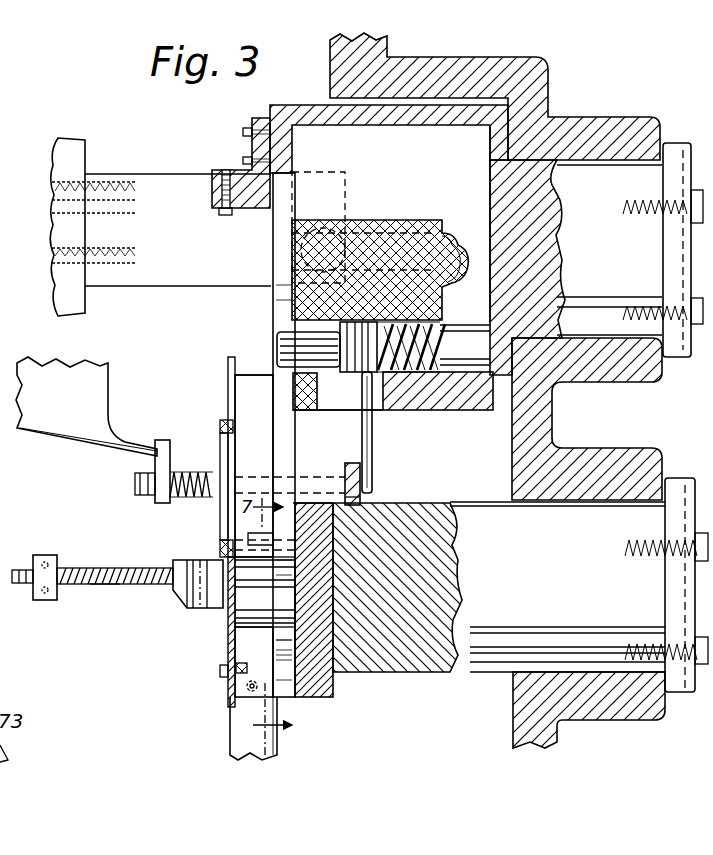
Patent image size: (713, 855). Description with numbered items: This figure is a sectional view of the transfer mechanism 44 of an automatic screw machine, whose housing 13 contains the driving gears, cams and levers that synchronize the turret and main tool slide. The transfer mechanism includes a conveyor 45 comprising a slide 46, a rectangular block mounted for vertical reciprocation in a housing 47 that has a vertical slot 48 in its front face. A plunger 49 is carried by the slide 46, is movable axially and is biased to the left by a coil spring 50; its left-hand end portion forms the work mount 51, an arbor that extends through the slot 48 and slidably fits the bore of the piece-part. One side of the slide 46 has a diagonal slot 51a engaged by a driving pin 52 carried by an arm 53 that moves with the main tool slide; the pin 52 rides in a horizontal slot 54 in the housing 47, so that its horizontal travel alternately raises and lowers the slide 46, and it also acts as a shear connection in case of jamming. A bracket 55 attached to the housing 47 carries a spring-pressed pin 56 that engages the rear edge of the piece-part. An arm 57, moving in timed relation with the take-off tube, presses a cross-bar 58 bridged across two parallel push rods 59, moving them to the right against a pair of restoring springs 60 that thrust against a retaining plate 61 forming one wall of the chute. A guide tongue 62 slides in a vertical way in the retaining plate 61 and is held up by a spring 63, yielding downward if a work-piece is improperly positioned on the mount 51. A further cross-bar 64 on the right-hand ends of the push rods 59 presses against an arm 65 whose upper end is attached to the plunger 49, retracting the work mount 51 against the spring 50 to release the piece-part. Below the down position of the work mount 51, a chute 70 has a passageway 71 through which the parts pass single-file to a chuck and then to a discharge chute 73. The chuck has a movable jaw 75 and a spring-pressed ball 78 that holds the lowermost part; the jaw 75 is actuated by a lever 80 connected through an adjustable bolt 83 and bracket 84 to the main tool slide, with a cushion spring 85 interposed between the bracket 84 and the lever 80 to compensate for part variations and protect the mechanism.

The housing 13 is at (579, 117).
The transfer mechanism 44 is at (228, 385).
The conveyor 45 is at (430, 430).
The slide 46 is at (455, 410).
The housing 47 is at (325, 105).
The vertical slot 48 is at (273, 300).
The plunger 49 is at (494, 345).
The coil spring 50 is at (415, 372).
The work mount 51 is at (280, 352).
The diagonal slot 51a is at (356, 232).
The driving pin 52 is at (323, 236).
The arm 53 is at (165, 280).
The horizontal slot 54 is at (470, 250).
The bracket 55 is at (252, 146).
The spring-pressed pin 56 is at (226, 215).
The arm 57 is at (106, 418).
The cross-bar 58 is at (176, 432).
The push rods 59 is at (338, 492).
The restoring springs 60 is at (200, 486).
The retaining plate 61 is at (226, 542).
The guide tongue 62 is at (228, 360).
The spring 63 is at (218, 471).
The cross-bar 64 is at (362, 500).
The arm 65 is at (372, 452).
The chute 70 is at (220, 546).
The passageway 71 is at (245, 401).
The discharge chute 73 is at (225, 741).
The movable jaw 75 is at (240, 633).
The spring-pressed ball 78 is at (252, 682).
The lever 80 is at (210, 605).
The adjustable bolt 83 is at (90, 567).
The bracket 84 is at (47, 555).
The cushion spring 85 is at (100, 585).